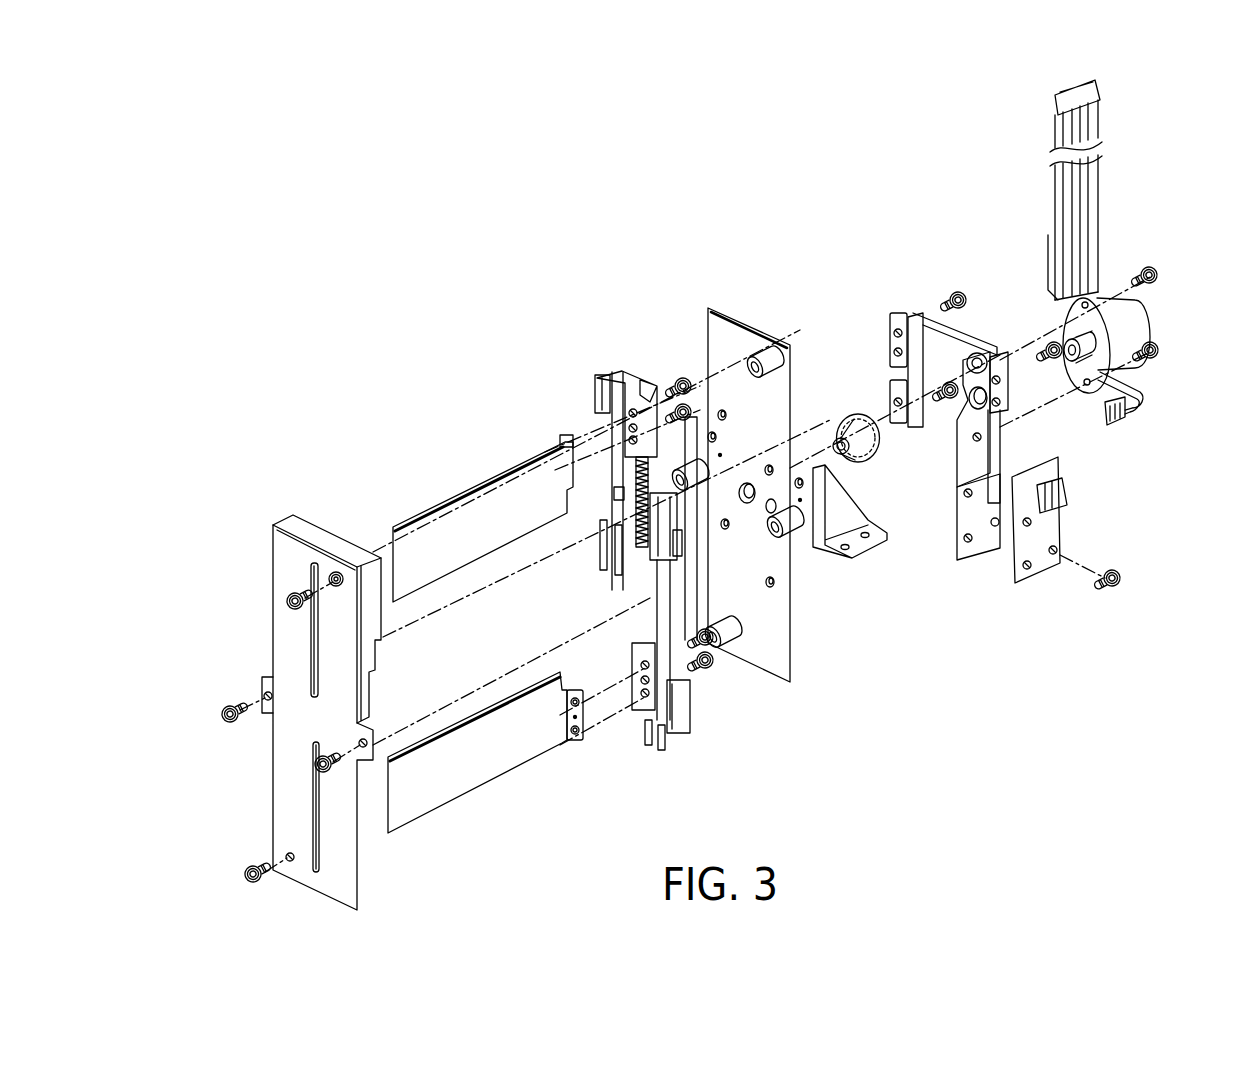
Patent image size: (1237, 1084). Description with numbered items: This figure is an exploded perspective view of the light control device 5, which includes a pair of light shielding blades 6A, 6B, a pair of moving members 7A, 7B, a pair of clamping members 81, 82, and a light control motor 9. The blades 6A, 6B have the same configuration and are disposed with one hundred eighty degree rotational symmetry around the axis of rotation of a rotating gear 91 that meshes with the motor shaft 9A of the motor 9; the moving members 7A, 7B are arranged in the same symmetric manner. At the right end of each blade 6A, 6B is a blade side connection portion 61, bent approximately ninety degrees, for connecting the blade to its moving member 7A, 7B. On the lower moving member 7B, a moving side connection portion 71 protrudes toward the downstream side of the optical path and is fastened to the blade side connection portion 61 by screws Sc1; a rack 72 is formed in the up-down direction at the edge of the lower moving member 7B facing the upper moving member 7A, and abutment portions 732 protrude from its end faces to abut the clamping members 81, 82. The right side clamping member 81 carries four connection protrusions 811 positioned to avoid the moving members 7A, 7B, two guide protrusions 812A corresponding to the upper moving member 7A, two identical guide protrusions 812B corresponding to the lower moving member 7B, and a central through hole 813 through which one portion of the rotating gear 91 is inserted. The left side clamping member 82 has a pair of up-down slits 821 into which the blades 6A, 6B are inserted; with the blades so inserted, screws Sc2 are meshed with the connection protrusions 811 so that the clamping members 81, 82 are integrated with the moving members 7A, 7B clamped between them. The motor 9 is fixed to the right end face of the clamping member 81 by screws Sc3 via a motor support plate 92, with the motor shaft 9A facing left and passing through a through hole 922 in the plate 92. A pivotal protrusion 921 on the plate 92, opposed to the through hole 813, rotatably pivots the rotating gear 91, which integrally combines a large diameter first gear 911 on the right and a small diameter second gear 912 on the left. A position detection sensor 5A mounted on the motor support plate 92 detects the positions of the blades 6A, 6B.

The light control device 5 is at (465, 290).
The position detection sensor 5A is at (1025, 478).
The light shielding blade 6A is at (470, 505).
The light shielding blade 6B is at (483, 770).
The blade side connection portion 61 is at (567, 434).
The moving member 7A is at (628, 368).
The moving member 7B is at (690, 722).
The moving side connection portion 71 is at (640, 442).
The rack 72 is at (618, 492).
The abutment portion 732 is at (626, 368).
The right side clamping member 81 is at (780, 668).
The connection protrusion 811 is at (762, 358).
The guide protrusion 812A is at (722, 410).
The guide protrusion 812B is at (714, 432).
The through hole 813 is at (748, 483).
The left side clamping member 82 is at (345, 879).
The slit 821 is at (310, 648).
The light control motor 9 is at (1130, 310).
The motor shaft 9A is at (1084, 393).
The rotating gear 91 is at (967, 587).
The first gear 911 is at (887, 452).
The second gear 912 is at (858, 463).
The motor support plate 92 is at (928, 315).
The pivotal protrusion 921 is at (940, 402).
The through hole 922 is at (978, 353).
The screw Sc1 is at (688, 404).
The screw Sc2 is at (287, 602).
The screw Sc3 is at (958, 292).